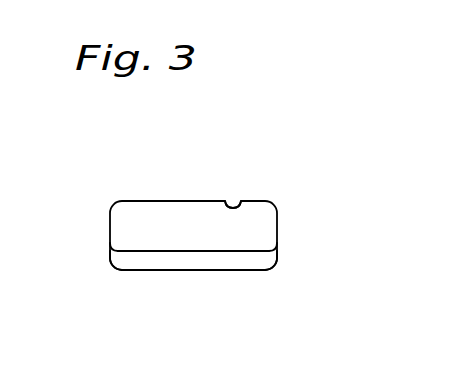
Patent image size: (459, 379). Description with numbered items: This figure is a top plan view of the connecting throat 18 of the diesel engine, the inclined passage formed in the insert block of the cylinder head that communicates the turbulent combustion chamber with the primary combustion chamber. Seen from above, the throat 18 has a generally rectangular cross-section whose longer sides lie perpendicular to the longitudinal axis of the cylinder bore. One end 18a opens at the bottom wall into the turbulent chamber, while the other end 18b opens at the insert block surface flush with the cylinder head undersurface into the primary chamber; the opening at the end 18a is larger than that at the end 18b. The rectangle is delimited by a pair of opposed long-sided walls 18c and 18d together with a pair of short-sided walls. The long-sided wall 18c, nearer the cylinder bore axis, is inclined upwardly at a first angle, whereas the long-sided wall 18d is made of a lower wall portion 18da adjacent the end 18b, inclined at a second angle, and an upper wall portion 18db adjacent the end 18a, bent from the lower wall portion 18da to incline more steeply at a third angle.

The connecting throat 18 is at (190, 225).
The end of throat opened at bottom wall 18a is at (232, 242).
The end of throat opened at insert block surface 18b is at (235, 239).
The long-sided wall 18c is at (240, 205).
The long-sided wall 18d is at (207, 255).
The lower wall portion 18da is at (162, 250).
The upper wall portion 18db is at (141, 257).